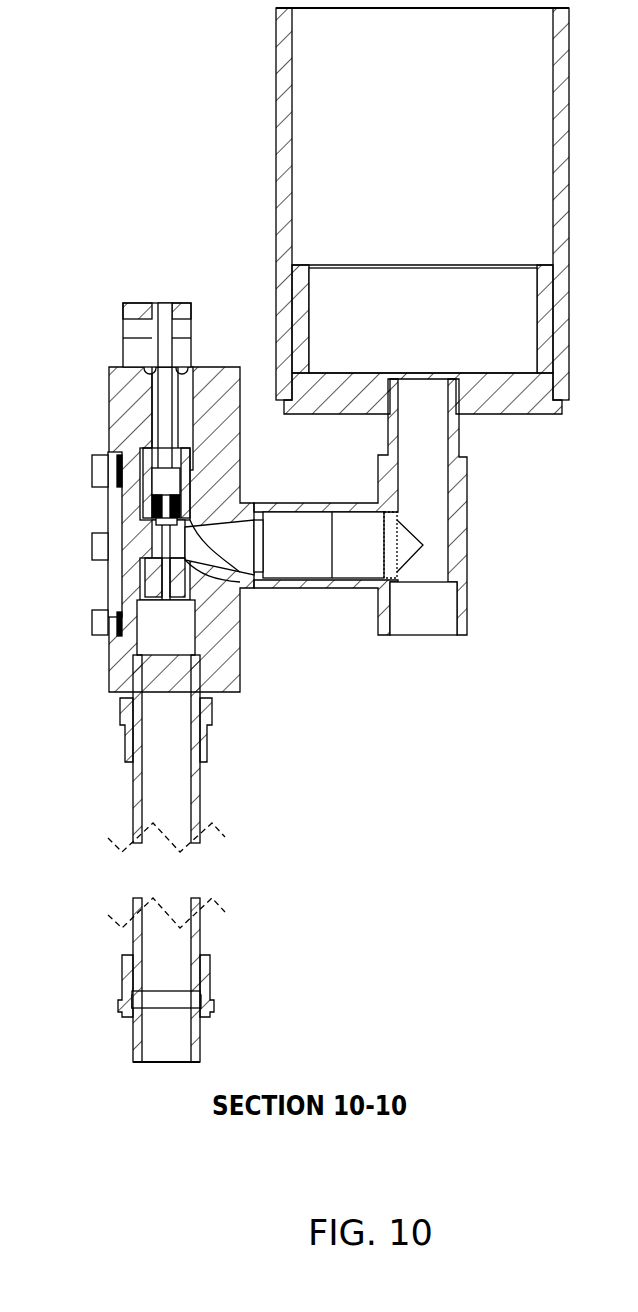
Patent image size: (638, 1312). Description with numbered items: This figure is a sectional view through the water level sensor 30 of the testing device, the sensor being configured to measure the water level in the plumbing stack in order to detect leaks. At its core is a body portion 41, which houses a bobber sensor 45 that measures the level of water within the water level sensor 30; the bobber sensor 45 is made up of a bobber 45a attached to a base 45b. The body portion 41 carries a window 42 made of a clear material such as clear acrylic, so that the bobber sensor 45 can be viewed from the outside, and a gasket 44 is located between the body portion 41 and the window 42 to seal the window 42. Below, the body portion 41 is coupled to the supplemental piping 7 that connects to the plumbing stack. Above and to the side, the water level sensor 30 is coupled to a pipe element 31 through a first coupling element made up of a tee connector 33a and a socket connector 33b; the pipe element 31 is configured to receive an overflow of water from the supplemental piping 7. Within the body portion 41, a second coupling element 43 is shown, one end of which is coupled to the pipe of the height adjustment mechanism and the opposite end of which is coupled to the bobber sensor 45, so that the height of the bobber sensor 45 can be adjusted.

The supplemental piping 7 is at (133, 778).
The water level sensor 30 is at (133, 278).
The pipe element 31 is at (308, 103).
The tee connector 33a is at (478, 543).
The socket connector 33b is at (468, 457).
The body portion 41 is at (123, 327).
The window 42 is at (105, 568).
The second coupling element 43 is at (138, 495).
The gasket 44 is at (112, 638).
The bobber sensor 45 is at (134, 553).
The bobber 45a is at (190, 600).
The base 45b is at (205, 582).